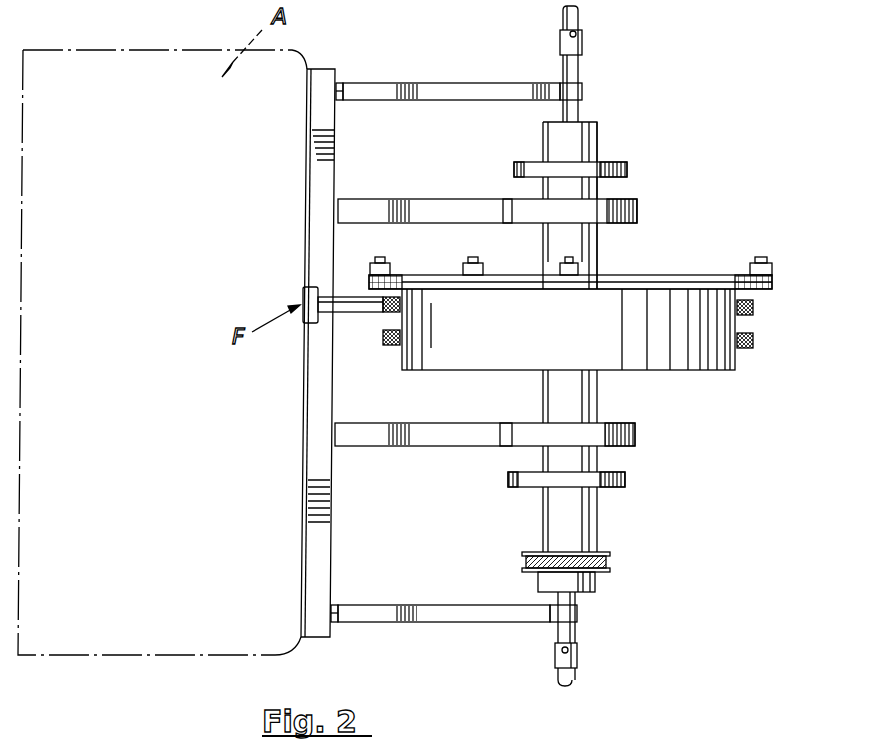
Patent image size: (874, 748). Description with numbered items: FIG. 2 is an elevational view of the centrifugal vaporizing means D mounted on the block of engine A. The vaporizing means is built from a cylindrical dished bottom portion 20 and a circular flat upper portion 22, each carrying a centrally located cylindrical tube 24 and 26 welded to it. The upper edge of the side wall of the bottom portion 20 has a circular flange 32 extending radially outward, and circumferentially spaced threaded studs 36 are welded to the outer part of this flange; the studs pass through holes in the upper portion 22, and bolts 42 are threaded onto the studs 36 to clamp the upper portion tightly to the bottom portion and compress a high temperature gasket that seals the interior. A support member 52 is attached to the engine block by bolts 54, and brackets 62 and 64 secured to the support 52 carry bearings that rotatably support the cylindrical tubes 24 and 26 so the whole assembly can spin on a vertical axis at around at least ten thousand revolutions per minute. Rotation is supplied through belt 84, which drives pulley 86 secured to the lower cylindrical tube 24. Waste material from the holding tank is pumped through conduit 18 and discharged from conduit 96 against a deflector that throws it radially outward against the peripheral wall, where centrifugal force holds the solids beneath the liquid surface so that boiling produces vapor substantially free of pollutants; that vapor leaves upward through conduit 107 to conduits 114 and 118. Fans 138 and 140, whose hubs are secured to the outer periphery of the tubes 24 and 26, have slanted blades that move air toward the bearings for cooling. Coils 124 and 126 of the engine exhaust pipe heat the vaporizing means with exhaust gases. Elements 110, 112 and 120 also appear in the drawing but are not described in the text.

The conduit 18 is at (557, 682).
The cylindrical dished bottom portion 20 is at (581, 345).
The circular flat upper portion 22 is at (690, 276).
The cylindrical tube 24 is at (598, 403).
The cylindrical tube 26 is at (600, 142).
The circular flange 32 is at (766, 291).
The threaded studs 36 is at (385, 259).
The bolts 42 is at (378, 263).
The support member 52 is at (323, 70).
The bolts 54 is at (344, 82).
The bracket 62 is at (638, 437).
The bracket 64 is at (638, 208).
The belt 84 is at (610, 562).
The pulley 86 is at (600, 553).
The conduit 96 is at (577, 636).
The conduit 107 is at (580, 112).
The lower support arm 110 is at (482, 618).
The lower coupling block 112 is at (555, 656).
The conduit 114 is at (430, 84).
The conduit 118 is at (579, 24).
The upper coupling block 120 is at (583, 47).
The coil 124 is at (755, 345).
The coil 126 is at (755, 312).
The fan 138 is at (628, 168).
The fan 140 is at (628, 480).